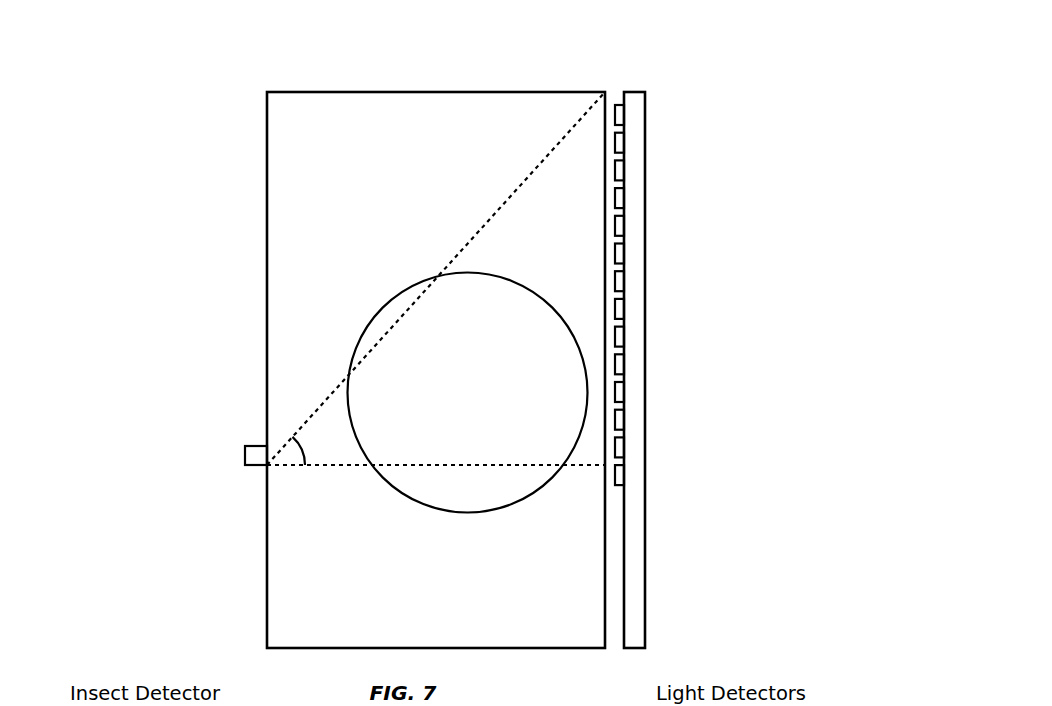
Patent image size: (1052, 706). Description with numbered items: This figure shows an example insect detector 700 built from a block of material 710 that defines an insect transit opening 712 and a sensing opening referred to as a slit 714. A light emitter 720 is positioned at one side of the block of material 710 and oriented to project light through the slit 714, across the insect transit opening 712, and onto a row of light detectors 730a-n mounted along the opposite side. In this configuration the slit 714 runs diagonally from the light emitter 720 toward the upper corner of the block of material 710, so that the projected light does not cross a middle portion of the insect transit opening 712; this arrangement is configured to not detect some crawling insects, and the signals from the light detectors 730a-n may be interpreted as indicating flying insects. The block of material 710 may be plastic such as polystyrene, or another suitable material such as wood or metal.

The insect detector 700 is at (184, 104).
The block of material 710 is at (267, 262).
The insect transit opening 712 is at (454, 422).
The slit 714 is at (478, 225).
The light emitter 720 is at (245, 455).
The light detectors 730a-n is at (727, 146).